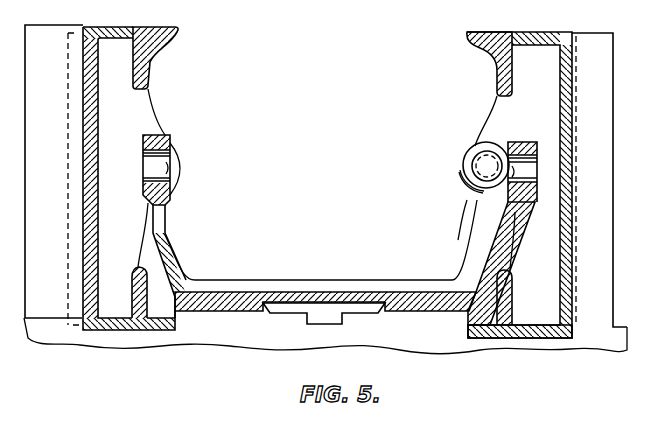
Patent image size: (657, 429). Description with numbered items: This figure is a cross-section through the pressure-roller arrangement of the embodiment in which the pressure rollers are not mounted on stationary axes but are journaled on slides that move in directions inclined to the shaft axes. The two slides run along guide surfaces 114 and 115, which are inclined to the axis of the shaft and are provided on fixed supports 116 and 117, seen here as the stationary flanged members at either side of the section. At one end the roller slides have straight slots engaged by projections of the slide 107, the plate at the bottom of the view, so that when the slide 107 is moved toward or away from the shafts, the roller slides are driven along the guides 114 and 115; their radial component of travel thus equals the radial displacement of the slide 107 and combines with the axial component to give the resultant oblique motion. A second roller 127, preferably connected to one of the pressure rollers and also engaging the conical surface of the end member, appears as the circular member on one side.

The slide 107 is at (410, 290).
The guide surface 114 is at (150, 27).
The guide surface 115 is at (489, 32).
The fixed support 116 is at (110, 27).
The fixed support 117 is at (533, 330).
The second roller 127 is at (475, 152).